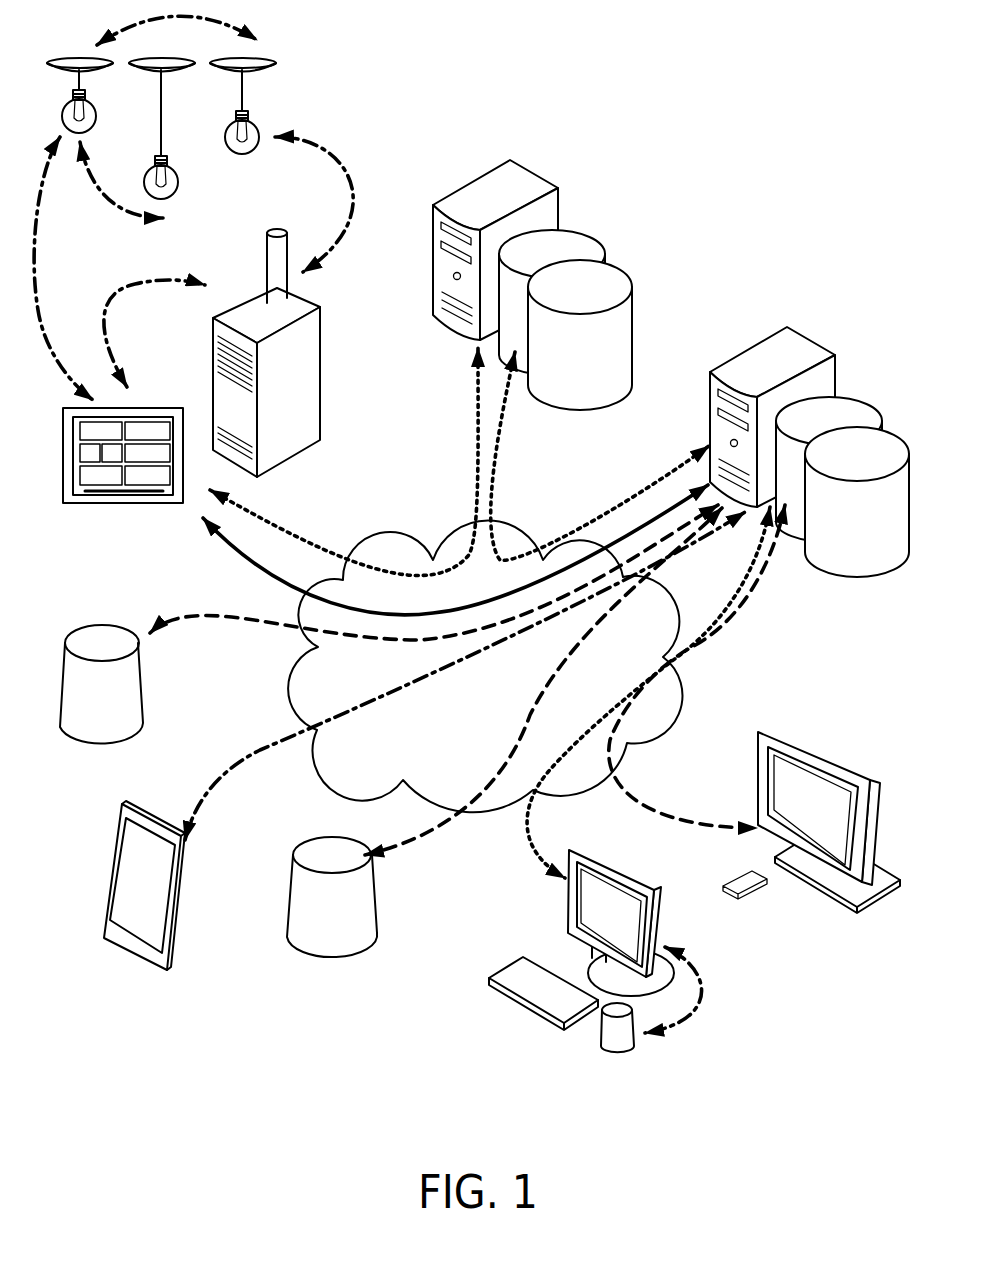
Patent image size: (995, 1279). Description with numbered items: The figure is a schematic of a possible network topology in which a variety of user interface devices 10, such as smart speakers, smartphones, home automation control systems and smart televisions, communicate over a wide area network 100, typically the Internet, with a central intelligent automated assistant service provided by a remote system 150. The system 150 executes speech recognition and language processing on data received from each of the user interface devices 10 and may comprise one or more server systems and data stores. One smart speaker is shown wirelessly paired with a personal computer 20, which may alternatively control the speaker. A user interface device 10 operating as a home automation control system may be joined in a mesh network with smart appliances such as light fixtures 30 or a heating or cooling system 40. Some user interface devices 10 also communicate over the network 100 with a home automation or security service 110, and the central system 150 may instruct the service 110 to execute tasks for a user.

The user interface devices 10 is at (150, 493).
The personal computer 20 is at (622, 927).
The light fixtures 30 is at (300, 401).
The heating or cooling system 40 is at (273, 83).
The wide area network 100 is at (492, 734).
The home automation or security service 110 is at (602, 353).
The remote system 150 is at (880, 520).